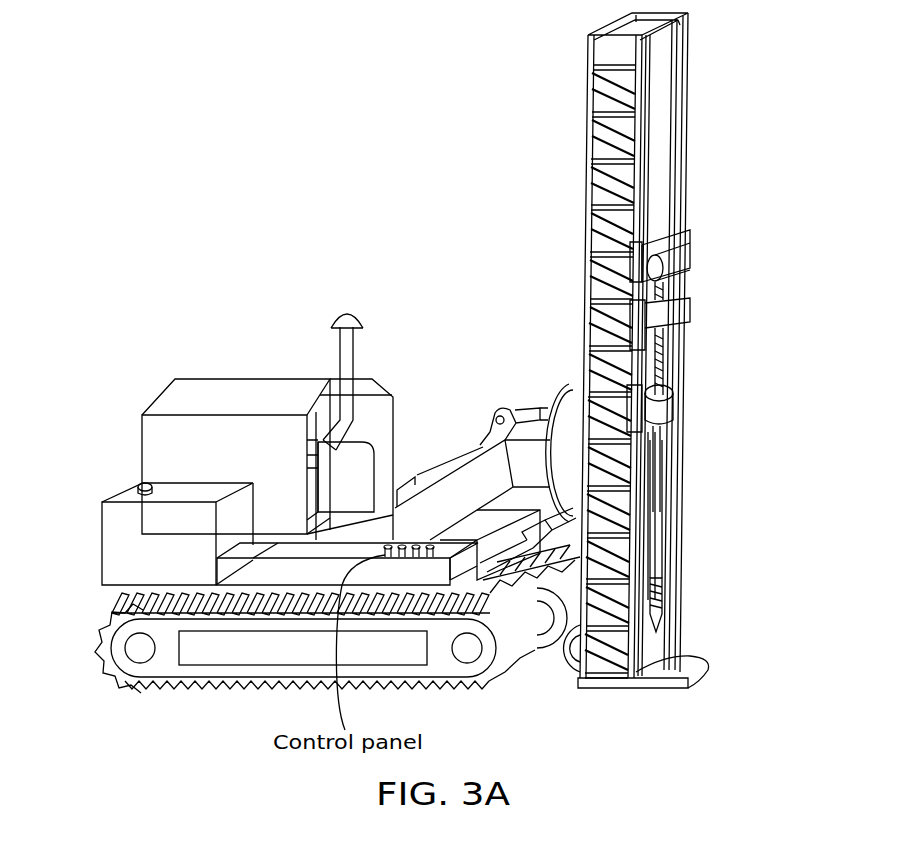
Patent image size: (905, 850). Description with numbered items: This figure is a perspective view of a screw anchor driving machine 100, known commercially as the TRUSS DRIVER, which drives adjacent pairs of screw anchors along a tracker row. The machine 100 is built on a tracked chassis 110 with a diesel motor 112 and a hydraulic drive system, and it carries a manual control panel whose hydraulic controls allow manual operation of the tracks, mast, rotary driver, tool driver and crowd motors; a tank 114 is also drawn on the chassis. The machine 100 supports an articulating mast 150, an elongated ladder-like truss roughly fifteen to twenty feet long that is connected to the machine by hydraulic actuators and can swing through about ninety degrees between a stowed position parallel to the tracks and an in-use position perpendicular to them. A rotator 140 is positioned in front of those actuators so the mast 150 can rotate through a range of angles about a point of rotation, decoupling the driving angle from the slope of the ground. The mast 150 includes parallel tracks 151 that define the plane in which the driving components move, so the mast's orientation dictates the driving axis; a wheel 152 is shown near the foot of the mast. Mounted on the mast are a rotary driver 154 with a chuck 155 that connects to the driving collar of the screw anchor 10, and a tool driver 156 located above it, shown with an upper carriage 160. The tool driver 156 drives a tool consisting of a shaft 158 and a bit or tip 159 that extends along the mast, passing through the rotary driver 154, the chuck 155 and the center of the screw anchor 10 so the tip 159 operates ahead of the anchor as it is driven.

The screw anchor driving machine 100 is at (231, 318).
The tracked chassis 110 is at (181, 672).
The diesel motor 112 is at (350, 470).
The tank 114 is at (141, 530).
The rotator 140 is at (556, 380).
The articulating mast 150 is at (705, 138).
The parallel tracks 151 is at (645, 63).
The wheel 152 is at (566, 685).
The rotary driver 154 is at (712, 398).
The chuck 155 is at (670, 432).
The tool driver 156 is at (715, 310).
The shaft 158 is at (670, 370).
The bit or tip 159 is at (663, 617).
The upper carriage 160 is at (722, 250).
The screw anchor 10 is at (663, 502).